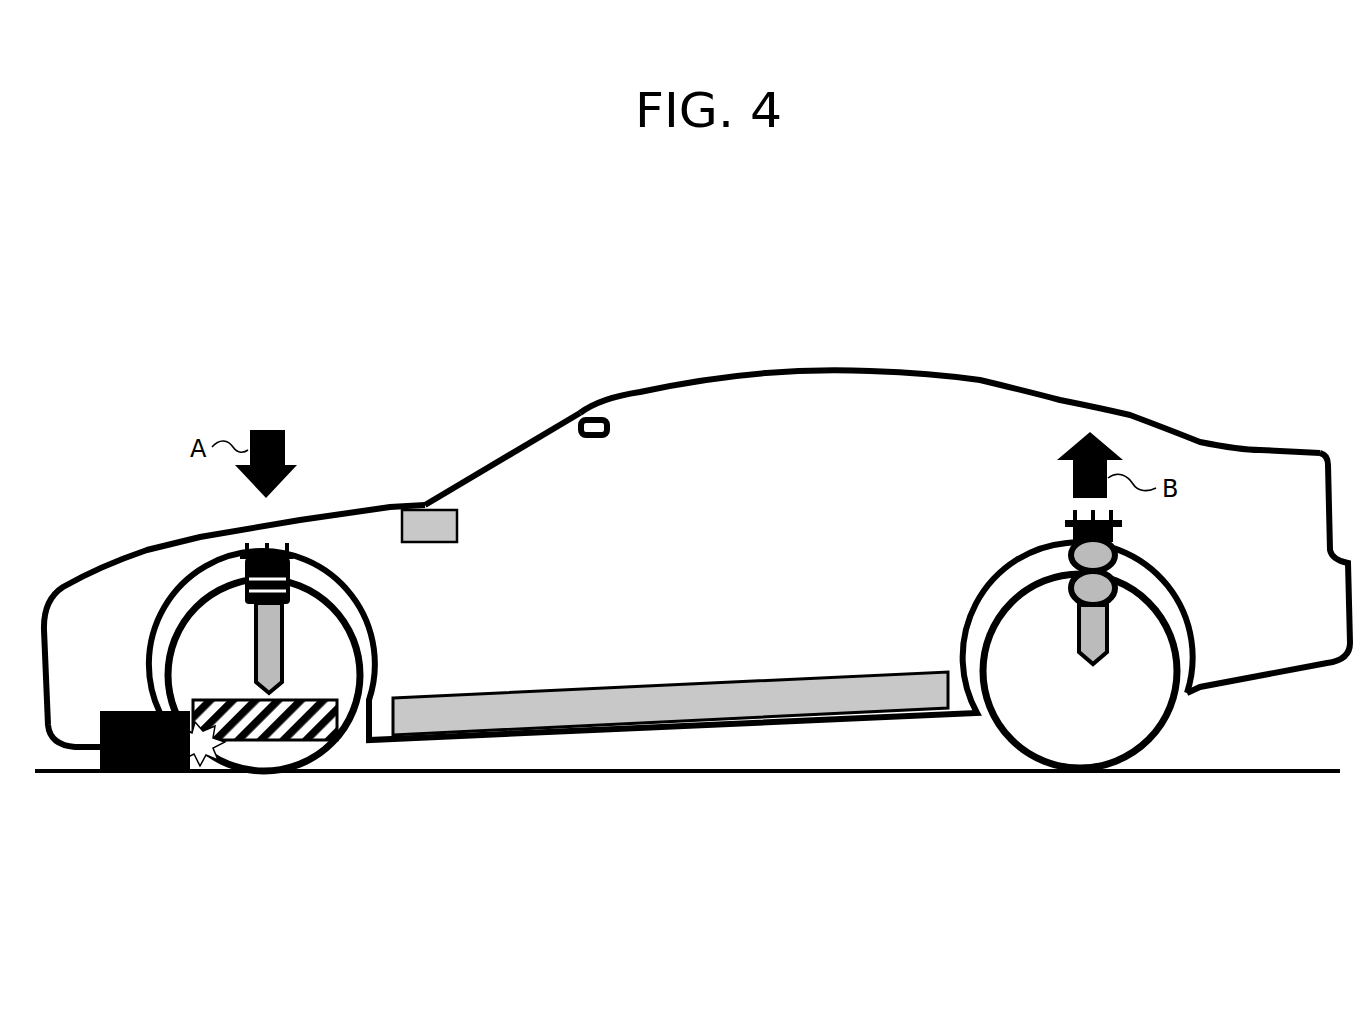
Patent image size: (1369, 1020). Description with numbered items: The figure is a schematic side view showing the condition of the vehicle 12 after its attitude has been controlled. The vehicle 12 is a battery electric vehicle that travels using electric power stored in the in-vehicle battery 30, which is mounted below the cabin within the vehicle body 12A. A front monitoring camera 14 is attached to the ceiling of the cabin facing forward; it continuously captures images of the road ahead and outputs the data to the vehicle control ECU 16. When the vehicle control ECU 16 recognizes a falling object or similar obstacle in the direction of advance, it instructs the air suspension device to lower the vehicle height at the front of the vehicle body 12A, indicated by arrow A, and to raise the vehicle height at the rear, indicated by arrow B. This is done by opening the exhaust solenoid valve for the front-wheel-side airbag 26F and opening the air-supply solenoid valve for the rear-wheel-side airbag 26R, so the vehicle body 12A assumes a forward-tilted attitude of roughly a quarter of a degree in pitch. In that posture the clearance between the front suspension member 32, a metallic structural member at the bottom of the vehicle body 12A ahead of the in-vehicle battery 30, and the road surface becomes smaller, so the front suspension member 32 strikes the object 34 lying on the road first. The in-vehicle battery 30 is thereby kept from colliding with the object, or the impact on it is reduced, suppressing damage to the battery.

The vehicle 12 is at (754, 320).
The vehicle body 12A is at (874, 368).
The front monitoring camera 14 is at (596, 412).
The vehicle control ECU 16 is at (426, 508).
The front-wheel-side airbag 26F is at (241, 570).
The rear-wheel-side airbag 26R is at (1062, 548).
The in-vehicle battery 30 is at (745, 682).
The front suspension member 32 is at (216, 700).
The obstacle / collision object 34 is at (142, 712).